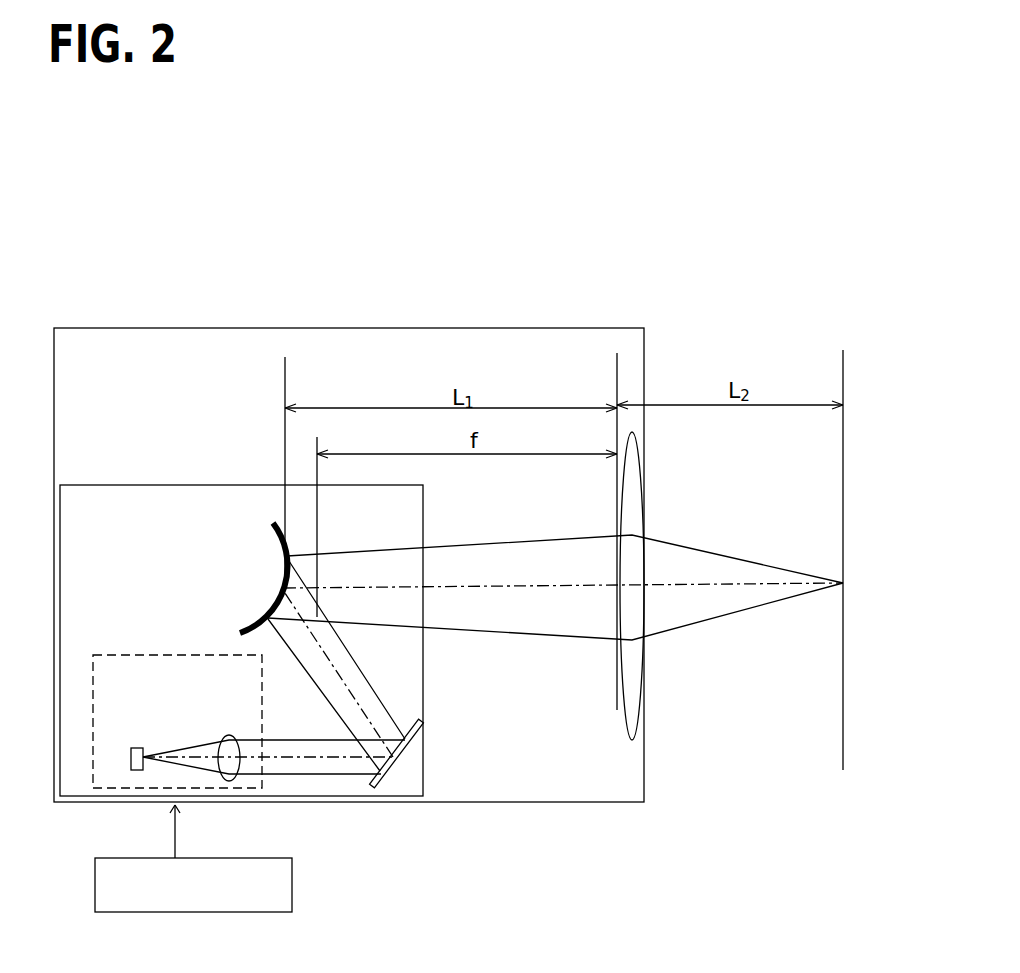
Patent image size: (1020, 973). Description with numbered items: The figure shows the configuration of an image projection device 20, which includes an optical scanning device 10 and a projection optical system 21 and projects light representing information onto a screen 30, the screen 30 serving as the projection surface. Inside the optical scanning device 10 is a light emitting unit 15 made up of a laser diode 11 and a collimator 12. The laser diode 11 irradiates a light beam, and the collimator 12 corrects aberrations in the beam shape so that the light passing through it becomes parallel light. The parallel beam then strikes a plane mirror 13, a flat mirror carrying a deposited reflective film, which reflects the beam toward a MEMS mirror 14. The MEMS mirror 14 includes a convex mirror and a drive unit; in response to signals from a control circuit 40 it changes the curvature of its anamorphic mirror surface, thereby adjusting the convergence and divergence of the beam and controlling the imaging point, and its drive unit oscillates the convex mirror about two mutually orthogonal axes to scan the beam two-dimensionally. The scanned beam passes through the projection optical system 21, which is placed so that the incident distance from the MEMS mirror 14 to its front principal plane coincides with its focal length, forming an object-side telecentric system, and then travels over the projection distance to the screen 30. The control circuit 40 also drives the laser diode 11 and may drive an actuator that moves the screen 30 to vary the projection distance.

The optical scanning device 10 is at (172, 485).
The laser diode 11 is at (137, 747).
The collimator 12 is at (228, 735).
The plane mirror 13 is at (408, 752).
The MEMS mirror 14 is at (280, 549).
The light emitting unit 15 is at (136, 655).
The image projection device 20 is at (421, 328).
The projection optical system 21 is at (645, 446).
The screen 30 is at (843, 376).
The control circuit 40 is at (265, 858).